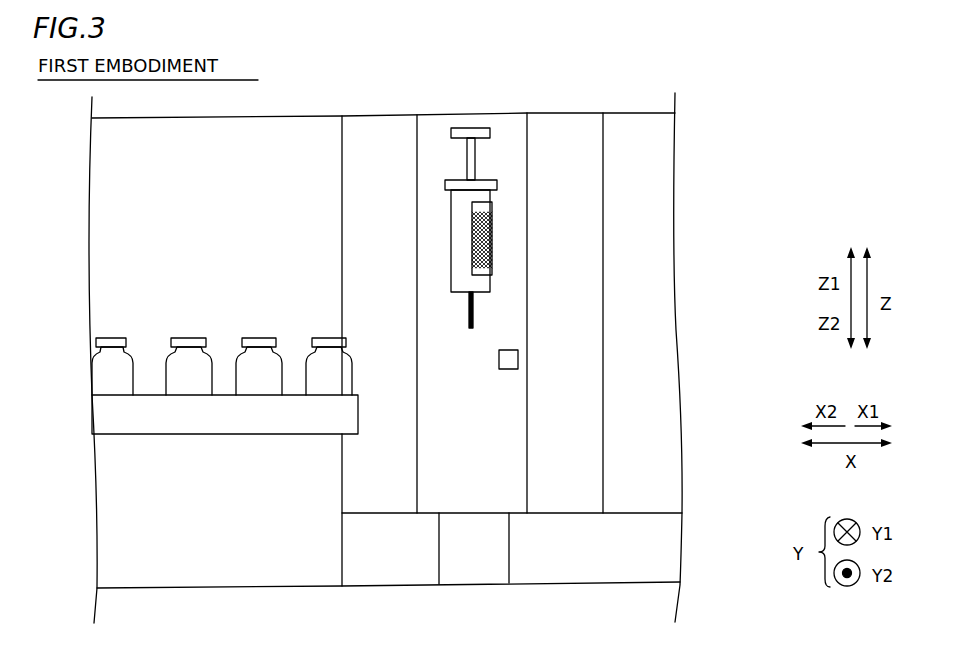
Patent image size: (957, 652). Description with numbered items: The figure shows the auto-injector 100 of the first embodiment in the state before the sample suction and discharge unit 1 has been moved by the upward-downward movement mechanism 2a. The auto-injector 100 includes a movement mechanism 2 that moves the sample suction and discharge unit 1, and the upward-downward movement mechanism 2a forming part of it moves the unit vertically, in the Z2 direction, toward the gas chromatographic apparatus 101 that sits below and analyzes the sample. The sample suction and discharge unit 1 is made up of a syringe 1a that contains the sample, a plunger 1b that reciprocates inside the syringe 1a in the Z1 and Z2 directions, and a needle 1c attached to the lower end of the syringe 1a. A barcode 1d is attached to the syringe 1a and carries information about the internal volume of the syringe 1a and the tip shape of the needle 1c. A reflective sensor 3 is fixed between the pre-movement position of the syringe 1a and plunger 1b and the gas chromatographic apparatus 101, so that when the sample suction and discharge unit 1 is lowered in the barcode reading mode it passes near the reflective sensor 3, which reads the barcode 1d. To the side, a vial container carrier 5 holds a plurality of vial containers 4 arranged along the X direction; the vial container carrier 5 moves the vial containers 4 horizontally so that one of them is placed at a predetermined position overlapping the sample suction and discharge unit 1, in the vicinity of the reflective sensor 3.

The sample suction and discharge unit 1 is at (303, 138).
The syringe 1a is at (451, 222).
The plunger 1b is at (467, 156).
The needle 1c is at (469, 300).
The barcode 1d is at (492, 240).
The movement mechanism 2 is at (603, 76).
The upward-downward movement mechanism 2a is at (530, 141).
The reflective sensor 3 is at (518, 357).
The vial containers 4 is at (188, 337).
The vial container carrier 5 is at (215, 434).
The auto-injector 100 is at (611, 195).
The gas chromatographic apparatus 101 is at (332, 540).